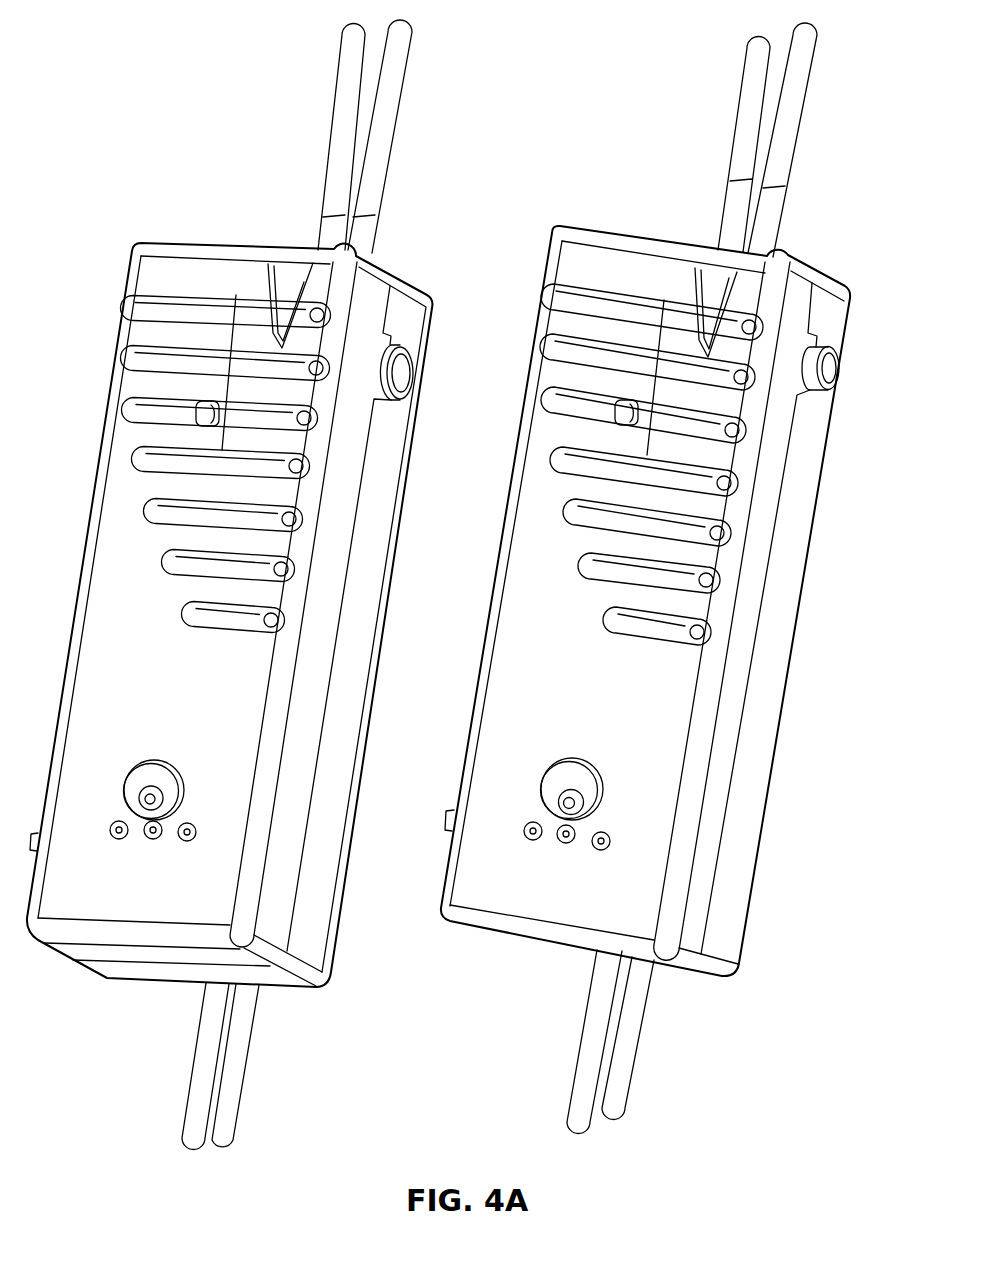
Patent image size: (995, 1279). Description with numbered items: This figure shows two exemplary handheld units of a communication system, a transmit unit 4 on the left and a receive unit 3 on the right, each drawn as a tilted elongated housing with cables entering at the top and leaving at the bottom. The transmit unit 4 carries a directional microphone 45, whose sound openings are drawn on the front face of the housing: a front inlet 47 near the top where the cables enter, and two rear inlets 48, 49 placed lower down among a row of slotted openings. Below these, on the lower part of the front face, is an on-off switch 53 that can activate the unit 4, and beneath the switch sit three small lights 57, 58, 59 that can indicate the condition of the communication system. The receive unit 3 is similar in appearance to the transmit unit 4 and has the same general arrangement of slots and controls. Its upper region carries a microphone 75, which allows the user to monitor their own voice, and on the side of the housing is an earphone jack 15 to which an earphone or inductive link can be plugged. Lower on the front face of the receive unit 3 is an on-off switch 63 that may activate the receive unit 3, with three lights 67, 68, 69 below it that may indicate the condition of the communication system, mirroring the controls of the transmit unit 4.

The receive unit 3 is at (752, 772).
The transmit unit 4 is at (318, 898).
The earphone jack 15 is at (842, 368).
The directional microphone 45 is at (245, 340).
The front inlet 47 is at (287, 268).
The rear inlet 48 is at (232, 415).
The rear inlet 49 is at (308, 413).
The on-off switch 53 is at (152, 785).
The light 57 is at (113, 838).
The light 58 is at (152, 838).
The light 59 is at (188, 820).
The on-off switch 63 is at (567, 790).
The light 67 is at (527, 838).
The light 68 is at (565, 838).
The light 69 is at (600, 838).
The microphone 75 is at (673, 342).